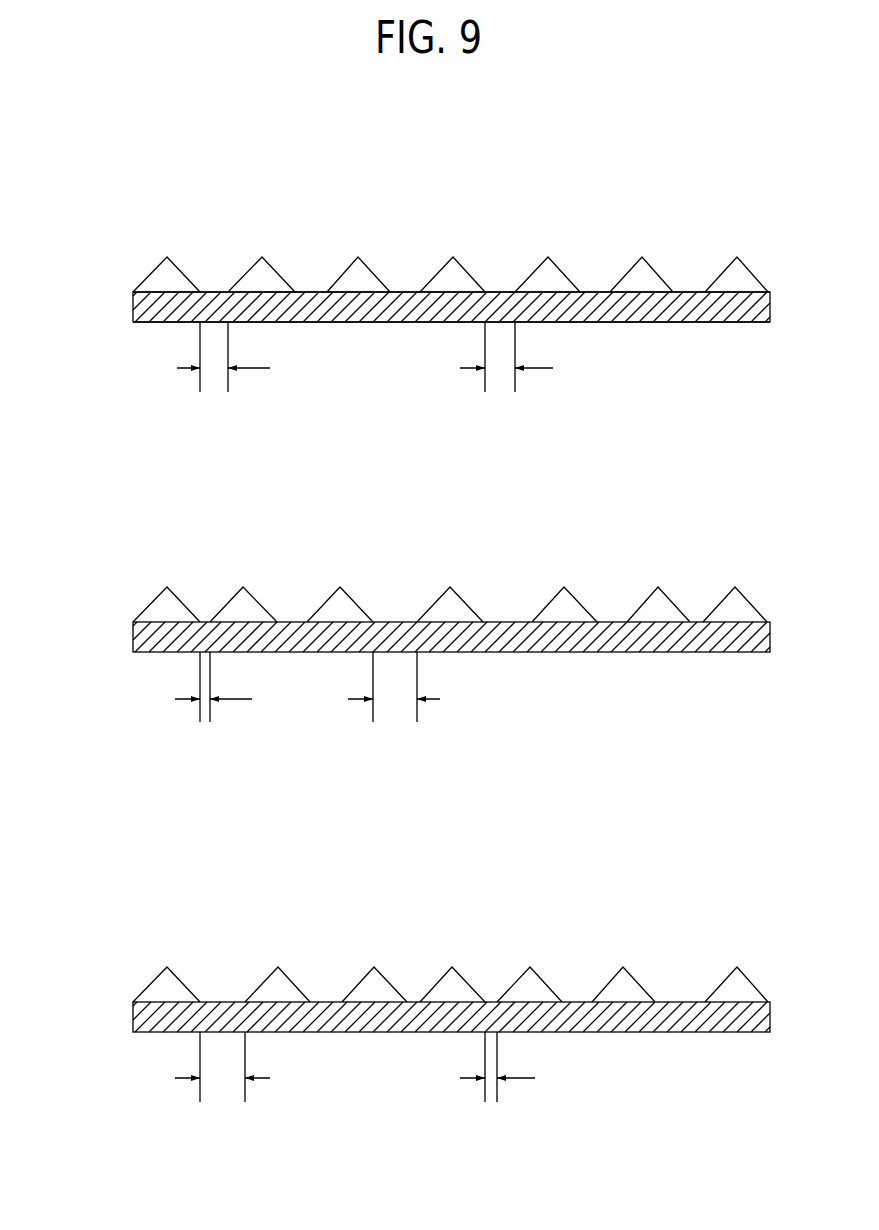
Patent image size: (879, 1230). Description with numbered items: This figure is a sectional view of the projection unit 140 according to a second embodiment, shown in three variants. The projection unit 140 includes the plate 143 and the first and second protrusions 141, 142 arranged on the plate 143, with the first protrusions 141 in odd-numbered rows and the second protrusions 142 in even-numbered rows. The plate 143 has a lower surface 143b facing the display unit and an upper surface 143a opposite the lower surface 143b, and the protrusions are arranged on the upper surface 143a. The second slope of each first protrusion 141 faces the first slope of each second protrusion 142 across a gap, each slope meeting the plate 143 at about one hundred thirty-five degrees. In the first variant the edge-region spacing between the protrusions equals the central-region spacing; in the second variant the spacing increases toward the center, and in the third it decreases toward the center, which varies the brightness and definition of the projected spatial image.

The projection unit 140 is at (745, 120).
The first protrusions 141 is at (155, 278).
The second protrusions 142 is at (268, 275).
The plate 143 is at (133, 301).
The upper surface 143a is at (712, 305).
The lower surface 143b is at (757, 322).